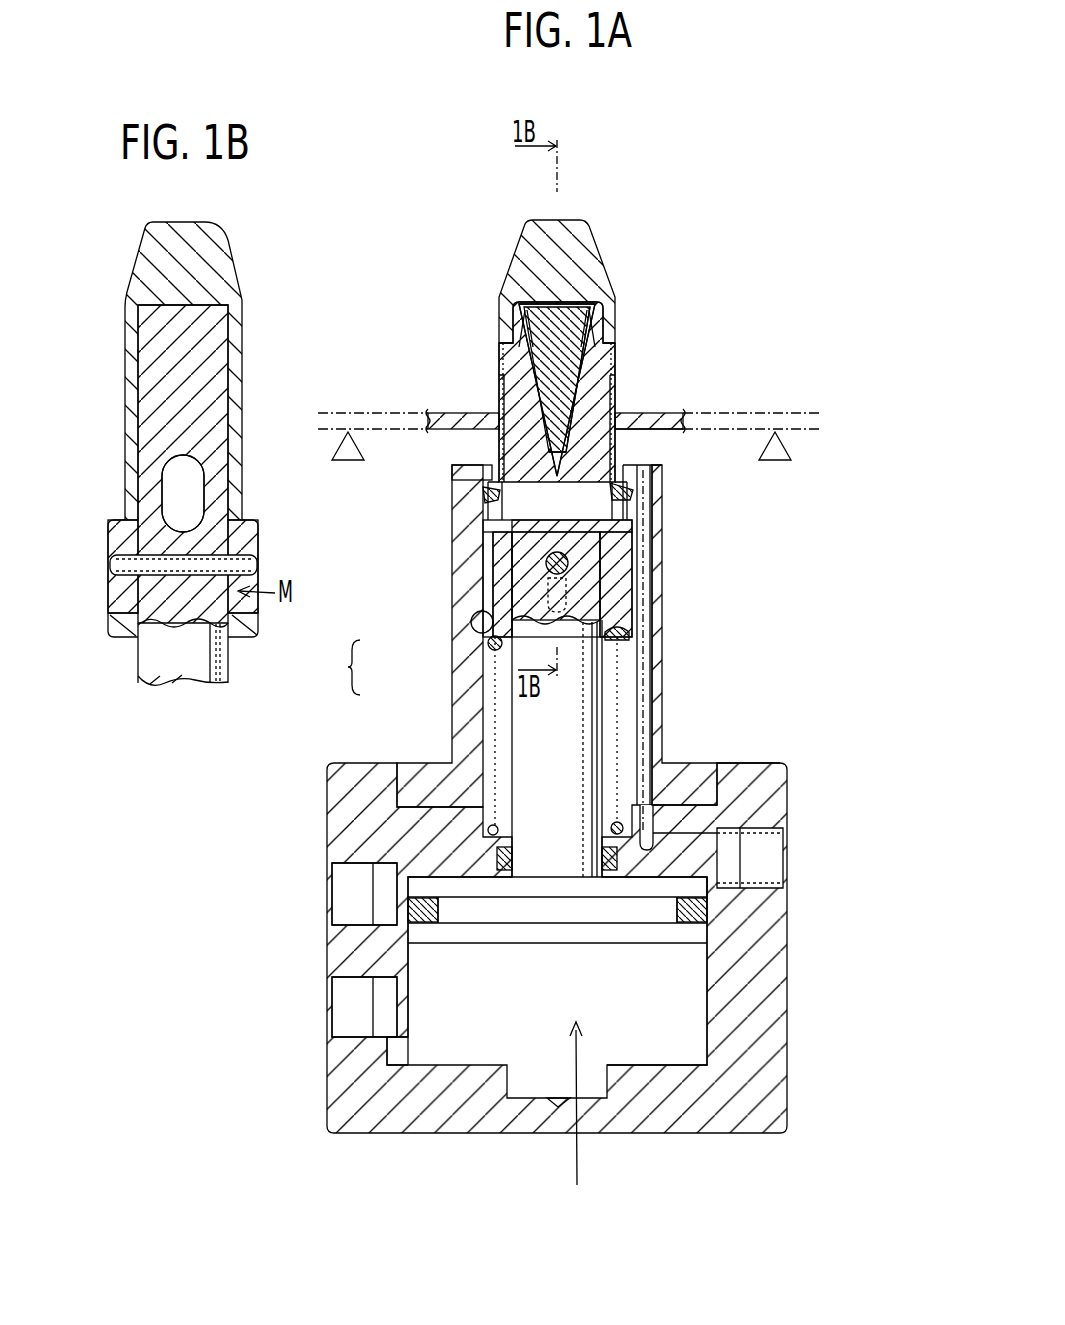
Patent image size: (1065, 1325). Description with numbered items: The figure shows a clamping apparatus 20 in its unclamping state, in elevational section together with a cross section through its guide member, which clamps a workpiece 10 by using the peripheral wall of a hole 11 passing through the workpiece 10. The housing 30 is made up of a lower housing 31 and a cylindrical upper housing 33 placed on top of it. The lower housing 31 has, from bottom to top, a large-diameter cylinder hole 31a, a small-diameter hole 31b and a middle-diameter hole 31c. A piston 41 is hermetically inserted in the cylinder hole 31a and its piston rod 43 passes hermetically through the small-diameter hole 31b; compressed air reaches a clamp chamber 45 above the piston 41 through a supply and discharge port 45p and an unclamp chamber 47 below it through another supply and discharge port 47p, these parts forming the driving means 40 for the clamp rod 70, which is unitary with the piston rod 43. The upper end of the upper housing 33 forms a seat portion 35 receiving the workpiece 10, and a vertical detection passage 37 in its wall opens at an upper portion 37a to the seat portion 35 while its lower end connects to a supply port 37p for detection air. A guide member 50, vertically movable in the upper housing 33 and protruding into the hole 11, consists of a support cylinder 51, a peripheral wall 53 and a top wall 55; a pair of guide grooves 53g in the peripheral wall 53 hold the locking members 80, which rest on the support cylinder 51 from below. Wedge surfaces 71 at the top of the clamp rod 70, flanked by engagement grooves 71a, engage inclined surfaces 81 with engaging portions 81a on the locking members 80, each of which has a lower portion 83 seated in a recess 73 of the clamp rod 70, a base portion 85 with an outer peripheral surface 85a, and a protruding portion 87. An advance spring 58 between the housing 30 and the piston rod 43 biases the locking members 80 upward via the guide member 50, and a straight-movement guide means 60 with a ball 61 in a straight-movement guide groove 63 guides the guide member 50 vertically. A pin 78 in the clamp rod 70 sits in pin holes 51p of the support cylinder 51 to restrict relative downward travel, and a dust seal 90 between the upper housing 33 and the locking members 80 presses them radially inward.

In FIG. 1A, the workpiece 10 is at (757, 413).
In FIG. 1A, the hole 11 is at (617, 432).
In FIG. 1A, the clamping apparatus 20 is at (803, 135).
In FIG. 1A, the housing 30 is at (803, 775).
In FIG. 1A, the lower housing 31 is at (743, 765).
In FIG. 1A, the large-diameter cylinder hole 31a is at (693, 1013).
In FIG. 1A, the small-diameter hole 31b is at (510, 850).
In FIG. 1A, the middle-diameter hole 31c is at (497, 826).
In FIG. 1A, the upper housing 33 is at (662, 690).
In FIG. 1A, the seat portion 35 is at (650, 468).
In FIG. 1A, the detection passage 37 is at (647, 603).
In FIG. 1A, the upper portion of detection passage 37a is at (630, 495).
In FIG. 1A, the supply port 37p is at (770, 867).
In FIG. 1A, the driving means 40 is at (580, 1122).
In FIG. 1A, the piston 41 is at (425, 937).
In FIG. 1A, the piston rod 43 is at (573, 670).
In FIG. 1A, the clamp chamber 45 is at (463, 890).
In FIG. 1A, the supply and discharge port 45p is at (355, 892).
In FIG. 1A, the unclamp chamber 47 is at (477, 1050).
In FIG. 1A, the supply and discharge port 47p is at (355, 1005).
In FIG. 1A, the guide member 50 is at (614, 316).
In FIG. 1B, the guide member 50 is at (144, 457).
In FIG. 1A, the support cylinder 51 is at (500, 555).
In FIG. 1B, the support cylinder 51 is at (118, 628).
In FIG. 1A, the pin holes 51p is at (546, 582).
In FIG. 1B, the pin holes 51p is at (115, 600).
In FIG. 1A, the peripheral wall 53 is at (497, 327).
In FIG. 1B, the peripheral wall 53 is at (130, 390).
In FIG. 1A, the guide grooves 53g is at (497, 350).
In FIG. 1A, the top wall 55 is at (523, 252).
In FIG. 1B, the top wall 55 is at (140, 270).
In FIG. 1A, the advance spring 58 is at (630, 638).
In FIG. 1A, the straight-movement guide means 60 is at (341, 667).
In FIG. 1A, the ball 61 is at (488, 648).
In FIG. 1A, the straight-movement guide groove 63 is at (473, 628).
In FIG. 1A, the clamp rod 70 is at (618, 300).
In FIG. 1B, the clamp rod 70 is at (128, 675).
In FIG. 1A, the wedge surfaces 71 is at (620, 342).
In FIG. 1A, the engagement grooves 71a is at (620, 390).
In FIG. 1A, the recesses 73 is at (487, 530).
In FIG. 1B, the recesses 73 is at (190, 528).
In FIG. 1A, the pin 78 is at (568, 565).
In FIG. 1B, the pin 78 is at (115, 565).
In FIG. 1A, the locking members 80 is at (620, 398).
In FIG. 1A, the inclined surfaces 81 is at (617, 358).
In FIG. 1A, the engaging portions 81a is at (588, 328).
In FIG. 1A, the lower portion 83 is at (482, 510).
In FIG. 1A, the base portion 85 is at (495, 380).
In FIG. 1A, the outer peripheral surface of base portion 85a is at (493, 400).
In FIG. 1A, the protruding portion 87 is at (495, 363).
In FIG. 1A, the dust seal 90 is at (662, 520).